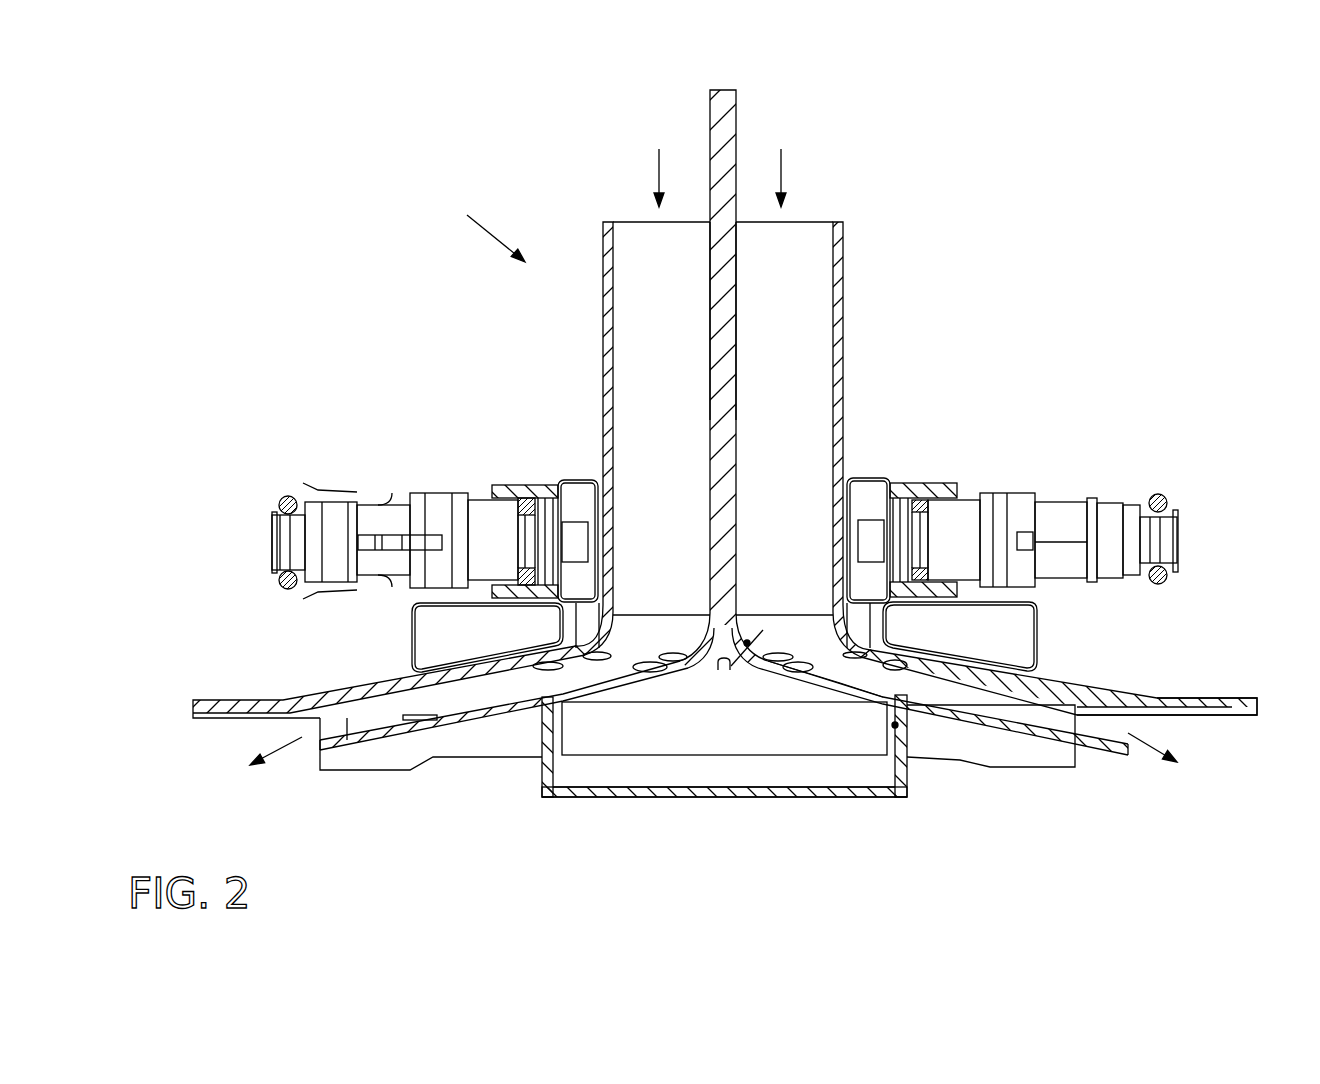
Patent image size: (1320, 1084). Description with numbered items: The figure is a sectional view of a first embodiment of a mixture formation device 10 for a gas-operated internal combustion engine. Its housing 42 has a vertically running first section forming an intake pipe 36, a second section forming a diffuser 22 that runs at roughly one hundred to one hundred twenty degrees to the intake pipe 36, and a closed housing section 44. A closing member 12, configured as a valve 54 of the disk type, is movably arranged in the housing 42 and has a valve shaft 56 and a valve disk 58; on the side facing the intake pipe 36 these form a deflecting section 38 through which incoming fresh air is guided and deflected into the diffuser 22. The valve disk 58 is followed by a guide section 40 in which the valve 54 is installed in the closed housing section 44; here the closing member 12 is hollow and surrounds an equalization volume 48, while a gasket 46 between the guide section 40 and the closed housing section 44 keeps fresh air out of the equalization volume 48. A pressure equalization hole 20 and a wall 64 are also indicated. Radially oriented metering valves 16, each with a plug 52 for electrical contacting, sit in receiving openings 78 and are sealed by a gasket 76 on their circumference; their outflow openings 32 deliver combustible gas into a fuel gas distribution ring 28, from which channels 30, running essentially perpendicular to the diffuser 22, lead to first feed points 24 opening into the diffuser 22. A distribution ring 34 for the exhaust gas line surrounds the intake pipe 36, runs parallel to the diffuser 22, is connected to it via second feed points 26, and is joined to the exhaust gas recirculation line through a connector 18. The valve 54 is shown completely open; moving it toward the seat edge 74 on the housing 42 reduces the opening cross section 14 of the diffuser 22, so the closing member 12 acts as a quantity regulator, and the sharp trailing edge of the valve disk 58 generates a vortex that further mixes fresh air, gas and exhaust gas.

The mixture formation device 10 is at (609, 205).
The closing member 12 is at (728, 163).
The opening cross section 14 is at (533, 682).
The metering valve 16 is at (375, 488).
The connector 18 is at (415, 638).
The pressure equalization hole 20 is at (763, 630).
The diffuser 22 is at (355, 702).
The first feed point 24 is at (858, 655).
The second feed point 26 is at (902, 665).
The fuel gas distribution ring 28 is at (577, 493).
The channel 30 is at (590, 625).
The outflow opening 32 is at (587, 545).
The distribution ring for the exhaust gas line 34 is at (1023, 648).
The intake pipe 36 is at (838, 288).
The deflecting section 38 is at (712, 585).
The guide section 40 is at (893, 738).
The housing 42 is at (608, 297).
The closed housing section 44 is at (620, 791).
The gasket 46 is at (550, 727).
The equalization volume 48 is at (718, 767).
The plug 52 is at (418, 542).
The valve 54 is at (718, 363).
The valve shaft 56 is at (725, 305).
The valve disk 58 is at (818, 680).
The wall 64 is at (1045, 681).
The seat edge 74 is at (862, 683).
The gasket 76 is at (918, 505).
The receiving opening 78 is at (957, 497).